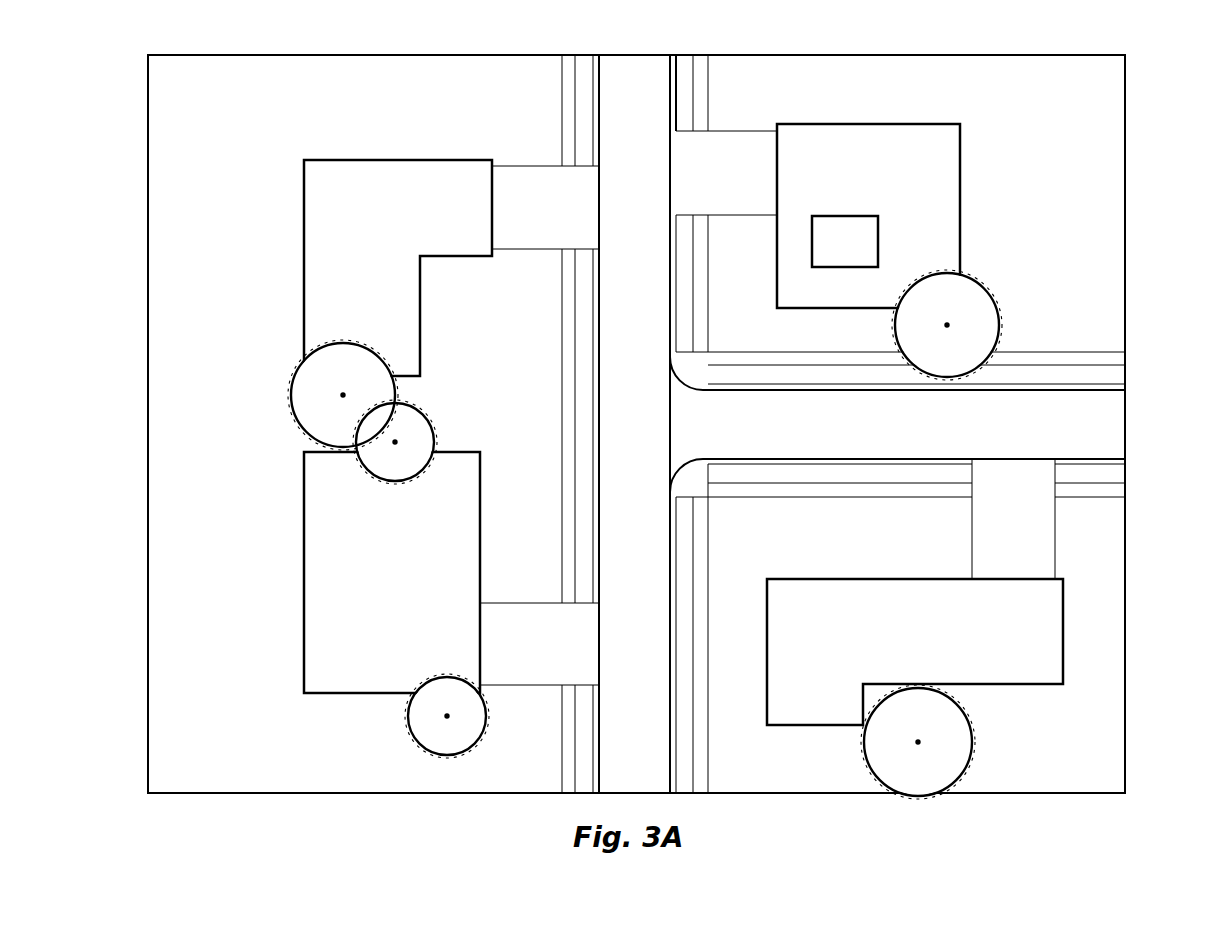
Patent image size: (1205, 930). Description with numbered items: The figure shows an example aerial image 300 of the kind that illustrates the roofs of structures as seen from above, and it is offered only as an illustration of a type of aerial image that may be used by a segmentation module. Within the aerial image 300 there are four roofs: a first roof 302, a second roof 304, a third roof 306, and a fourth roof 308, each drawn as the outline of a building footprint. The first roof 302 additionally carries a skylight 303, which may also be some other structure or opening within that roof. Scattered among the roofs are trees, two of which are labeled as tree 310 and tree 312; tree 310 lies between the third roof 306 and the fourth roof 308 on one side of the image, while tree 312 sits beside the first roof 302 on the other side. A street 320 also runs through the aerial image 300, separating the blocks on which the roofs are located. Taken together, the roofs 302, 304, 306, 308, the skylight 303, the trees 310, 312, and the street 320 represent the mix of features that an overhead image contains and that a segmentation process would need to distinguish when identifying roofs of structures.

The aerial image 300 is at (1050, 55).
The first roof 302 is at (888, 124).
The skylight 303 is at (846, 222).
The second roof 304 is at (1064, 613).
The third roof 306 is at (304, 612).
The fourth roof 308 is at (304, 265).
The tree 310 is at (292, 403).
The tree 312 is at (1000, 320).
The street 320 is at (1103, 428).